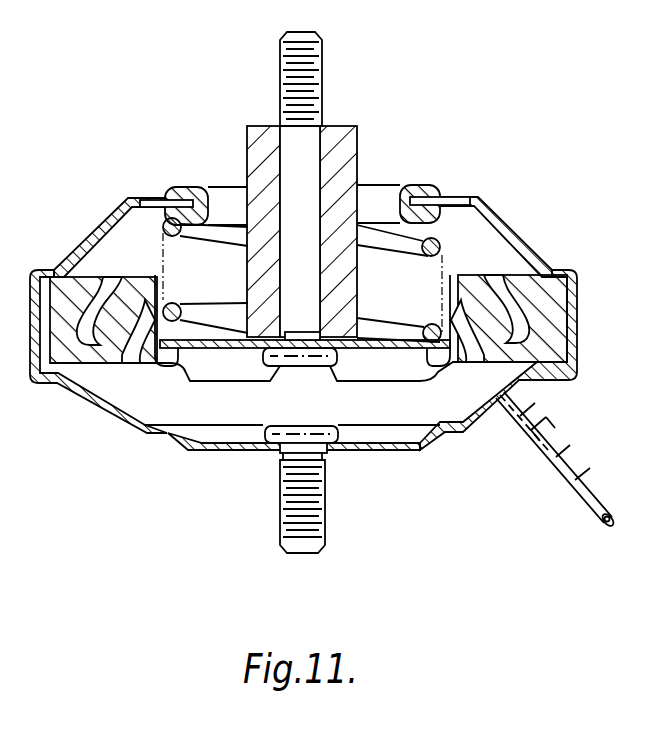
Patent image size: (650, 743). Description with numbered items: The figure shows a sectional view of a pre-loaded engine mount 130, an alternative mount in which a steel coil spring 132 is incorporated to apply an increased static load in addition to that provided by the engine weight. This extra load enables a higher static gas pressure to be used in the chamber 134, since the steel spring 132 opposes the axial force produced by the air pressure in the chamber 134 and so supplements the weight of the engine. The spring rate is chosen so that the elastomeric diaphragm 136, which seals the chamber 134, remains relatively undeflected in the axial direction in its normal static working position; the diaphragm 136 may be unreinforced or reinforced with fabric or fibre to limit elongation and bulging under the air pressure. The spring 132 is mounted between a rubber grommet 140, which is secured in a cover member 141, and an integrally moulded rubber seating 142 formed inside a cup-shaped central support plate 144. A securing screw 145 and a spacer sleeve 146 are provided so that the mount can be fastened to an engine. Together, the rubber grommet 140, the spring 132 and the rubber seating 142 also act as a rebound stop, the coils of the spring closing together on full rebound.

The pre-loaded engine mount 130 is at (520, 228).
The steel coil spring 132 is at (440, 241).
The chamber 134 is at (381, 410).
The elastomeric diaphragm 136 is at (527, 287).
The rubber grommet 140 is at (183, 188).
The cover member 141 is at (86, 240).
The rubber seating 142 is at (168, 350).
The cup-shaped central support plate 144 is at (118, 402).
The securing screw 145 is at (320, 72).
The spacer sleeve 146 is at (348, 168).